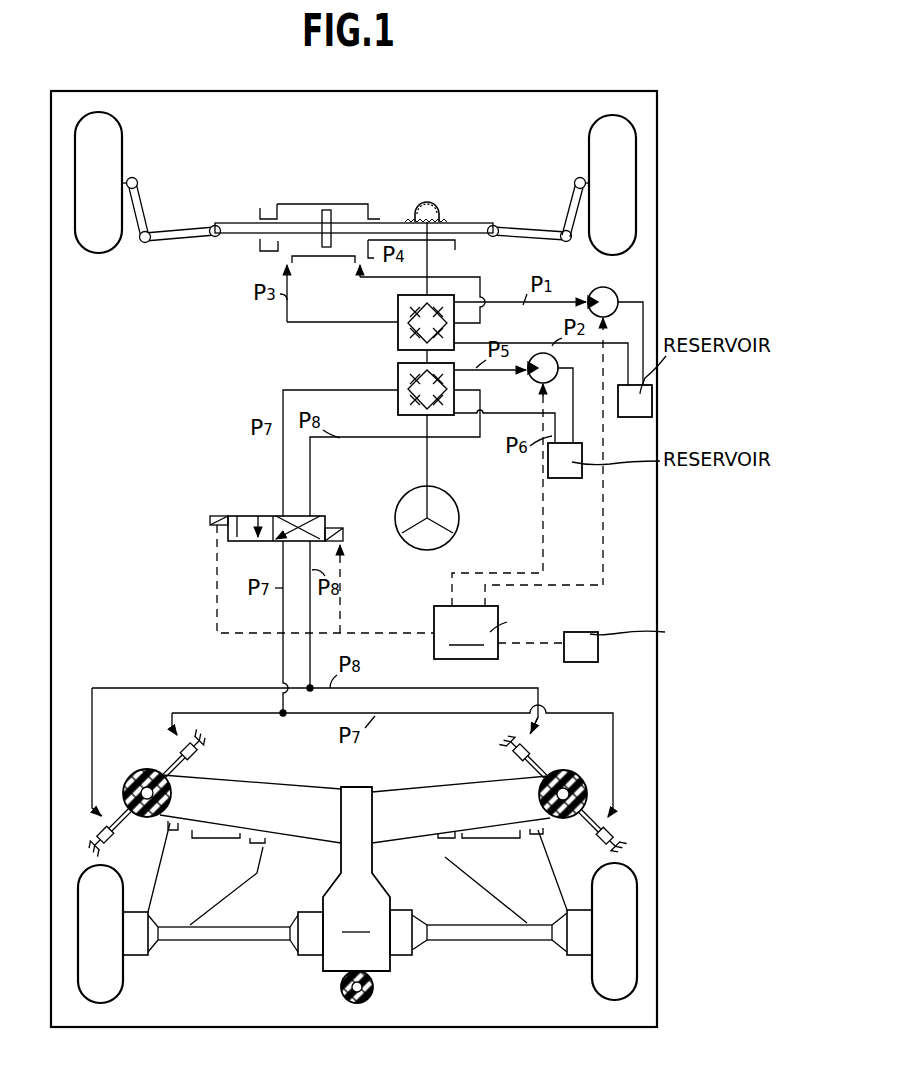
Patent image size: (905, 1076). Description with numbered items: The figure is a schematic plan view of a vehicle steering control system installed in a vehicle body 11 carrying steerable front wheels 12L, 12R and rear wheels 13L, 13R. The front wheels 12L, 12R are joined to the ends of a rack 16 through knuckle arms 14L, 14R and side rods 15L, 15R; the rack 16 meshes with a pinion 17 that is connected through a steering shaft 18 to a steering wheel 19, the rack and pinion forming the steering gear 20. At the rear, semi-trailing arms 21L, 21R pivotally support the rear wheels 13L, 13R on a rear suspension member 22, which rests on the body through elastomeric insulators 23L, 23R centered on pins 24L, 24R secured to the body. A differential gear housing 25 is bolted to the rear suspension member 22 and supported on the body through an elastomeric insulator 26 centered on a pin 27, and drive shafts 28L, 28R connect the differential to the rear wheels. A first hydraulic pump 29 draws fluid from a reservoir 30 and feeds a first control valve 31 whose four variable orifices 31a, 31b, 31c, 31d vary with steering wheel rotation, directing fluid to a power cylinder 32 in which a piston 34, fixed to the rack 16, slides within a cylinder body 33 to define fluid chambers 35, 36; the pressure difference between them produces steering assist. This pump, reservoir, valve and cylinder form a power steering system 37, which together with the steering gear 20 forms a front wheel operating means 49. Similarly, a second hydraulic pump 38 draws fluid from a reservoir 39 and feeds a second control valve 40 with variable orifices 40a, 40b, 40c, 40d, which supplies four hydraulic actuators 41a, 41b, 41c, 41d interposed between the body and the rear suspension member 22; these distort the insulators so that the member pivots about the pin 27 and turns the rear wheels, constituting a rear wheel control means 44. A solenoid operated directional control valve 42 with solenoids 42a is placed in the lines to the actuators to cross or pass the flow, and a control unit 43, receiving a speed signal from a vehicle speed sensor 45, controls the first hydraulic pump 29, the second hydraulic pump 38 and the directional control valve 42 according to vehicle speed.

The vehicle body 11 is at (443, 90).
The left front wheel 12L is at (105, 240).
The right front wheel 12R is at (628, 160).
The left rear wheel 13L is at (116, 988).
The right rear wheel 13R is at (598, 990).
The left knuckle arm 14L is at (143, 198).
The right knuckle arm 14R is at (574, 200).
The left side rod 15L is at (163, 244).
The right side rod 15R is at (526, 232).
The rack 16 is at (230, 222).
The pinion 17 is at (424, 200).
The steering shaft 18 is at (427, 258).
The steering wheel 19 is at (450, 540).
The steering gear 20 is at (440, 210).
The left semi-trailing arm 21L is at (233, 877).
The right semi-trailing arm 21R is at (490, 880).
The rear suspension member 22 is at (330, 792).
The left elastomeric insulator 23L is at (132, 780).
The right elastomeric insulator 23R is at (558, 776).
The left pin 24L is at (147, 770).
The right pin 24R is at (562, 727).
The differential gear housing 25 is at (356, 879).
The elastomeric insulator 26 is at (342, 993).
The pin 27 is at (372, 990).
The left drive shaft 28L is at (226, 940).
The right drive shaft 28R is at (500, 940).
The first hydraulic pump 29 is at (608, 290).
The reservoir 30 is at (634, 418).
The first control valve 31 is at (401, 310).
The variable orifice 31a is at (408, 310).
The variable orifice 31b is at (410, 333).
The variable orifice 31c is at (440, 300).
The variable orifice 31d is at (445, 335).
The power cylinder 32 is at (327, 205).
The cylinder body 33 is at (353, 206).
The piston 34 is at (327, 209).
The fluid chamber 35 is at (290, 205).
The fluid chamber 36 is at (372, 216).
The power steering system 37 is at (262, 268).
The second hydraulic pump 38 is at (538, 385).
The reservoir 39 is at (570, 478).
The second control valve 40 is at (431, 415).
The variable orifice 40a is at (410, 380).
The variable orifice 40b is at (410, 403).
The variable orifice 40c is at (443, 380).
The variable orifice 40d is at (440, 405).
The actuator 41a is at (196, 752).
The actuator 41b is at (118, 838).
The actuator 41c is at (505, 755).
The actuator 41d is at (590, 842).
The solenoid operated directional control valve 42 is at (260, 520).
The solenoids 42a is at (340, 512).
The control unit 43 is at (541, 616).
The rear wheel control means 44 is at (232, 688).
The vehicle speed sensor 45 is at (592, 640).
The front wheel operating means 49 is at (505, 168).